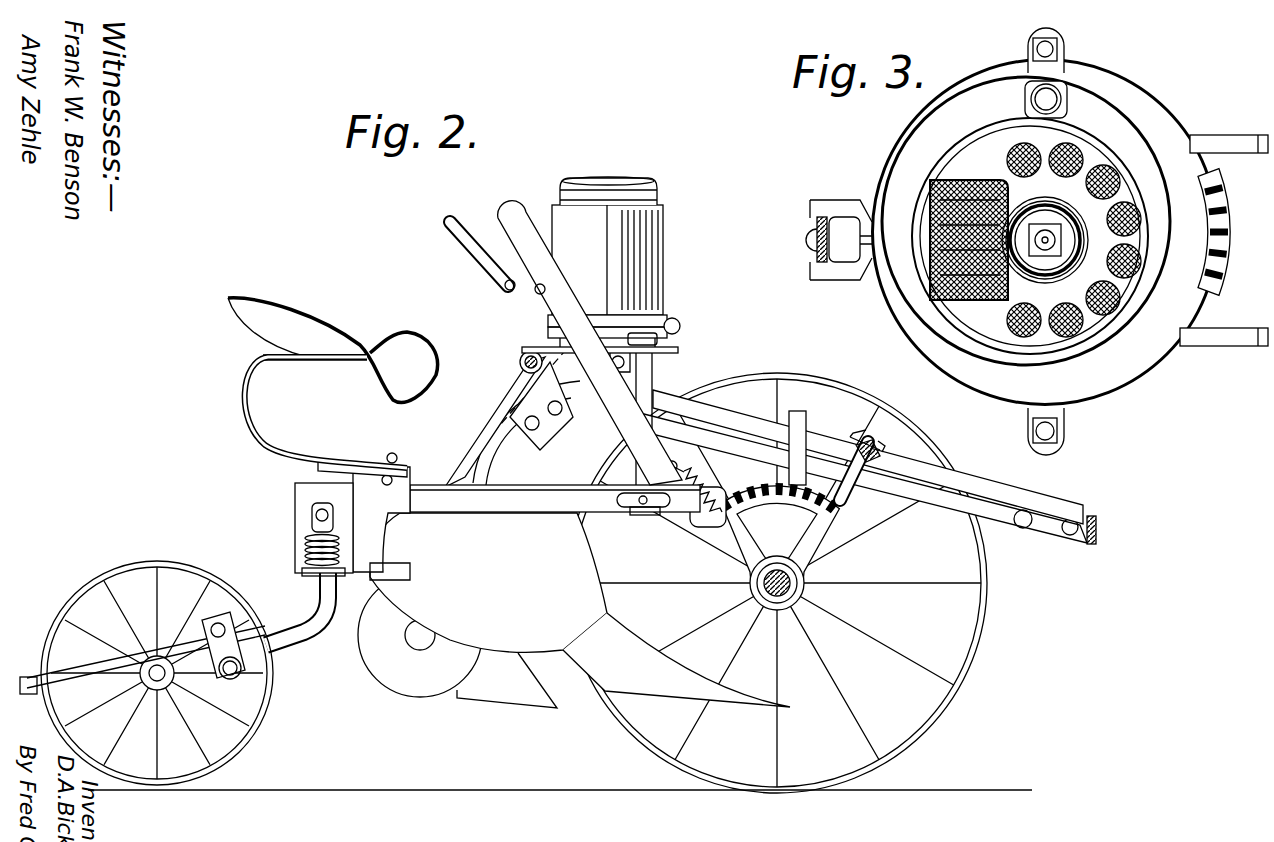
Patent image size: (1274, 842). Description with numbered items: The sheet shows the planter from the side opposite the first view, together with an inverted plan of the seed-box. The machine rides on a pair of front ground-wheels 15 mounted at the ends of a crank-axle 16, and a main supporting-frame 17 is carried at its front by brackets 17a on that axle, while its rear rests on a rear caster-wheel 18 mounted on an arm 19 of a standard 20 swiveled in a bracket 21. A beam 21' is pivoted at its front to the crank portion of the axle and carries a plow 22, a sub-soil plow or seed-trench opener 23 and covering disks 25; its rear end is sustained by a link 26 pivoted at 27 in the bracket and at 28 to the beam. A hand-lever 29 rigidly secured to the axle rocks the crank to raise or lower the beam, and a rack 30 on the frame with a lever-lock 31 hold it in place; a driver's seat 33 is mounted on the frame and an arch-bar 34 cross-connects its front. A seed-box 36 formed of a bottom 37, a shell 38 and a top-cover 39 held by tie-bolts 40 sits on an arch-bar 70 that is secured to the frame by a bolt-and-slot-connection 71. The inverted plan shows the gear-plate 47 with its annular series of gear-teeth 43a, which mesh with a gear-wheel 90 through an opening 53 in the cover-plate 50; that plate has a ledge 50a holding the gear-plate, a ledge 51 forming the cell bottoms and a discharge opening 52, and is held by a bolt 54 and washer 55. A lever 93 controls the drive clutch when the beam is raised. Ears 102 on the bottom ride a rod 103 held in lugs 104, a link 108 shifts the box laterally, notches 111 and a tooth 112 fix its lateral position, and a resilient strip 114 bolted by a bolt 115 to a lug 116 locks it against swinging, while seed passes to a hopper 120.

In FIG. 2, the front ground-wheels 15 is at (992, 640).
In FIG. 2, the crank-axle 16 is at (805, 585).
In FIG. 2, the main supporting-frame 17 is at (548, 502).
In FIG. 2, the brackets 17a is at (790, 527).
In FIG. 2, the rear caster-wheel 18 is at (147, 565).
In FIG. 2, the arm 19 is at (262, 706).
In FIG. 2, the standard 20 is at (318, 588).
In FIG. 2, the bracket 21 is at (352, 516).
In FIG. 2, the beam 21' is at (784, 462).
In FIG. 2, the plow 22 is at (580, 610).
In FIG. 2, the sub-soil plow or seed-trench opener 23 is at (463, 692).
In FIG. 2, the disks 25 is at (375, 648).
In FIG. 2, the link 26 is at (492, 428).
In FIG. 2, the pivot 27 is at (368, 566).
In FIG. 2, the pivot 28 is at (520, 362).
In FIG. 2, the hand-lever 29 is at (510, 302).
In FIG. 2, the rack 30 is at (705, 532).
In FIG. 2, the lever-lock 31 is at (702, 482).
In FIG. 2, the driver's seat 33 is at (260, 328).
In FIG. 2, the arch-bar 34 is at (800, 432).
In FIG. 2, the seed-box 36 is at (607, 260).
In FIG. 2, the bottom 37 is at (655, 320).
In FIG. 2, the shell 38 is at (650, 252).
In FIG. 2, the top-cover 39 is at (606, 182).
In FIG. 3, the tie-bolts 40 is at (1036, 48).
In FIG. 3, the gear-teeth 43a is at (992, 198).
In FIG. 3, the gear-plate 47 is at (975, 298).
In FIG. 3, the bottom-plate or cover 50 is at (1045, 232).
In FIG. 3, the ledge 50a is at (1082, 243).
In FIG. 3, the ledge 51 is at (908, 302).
In FIG. 3, the discharge opening 52 is at (1075, 80).
In FIG. 3, the opening 53 is at (930, 190).
In FIG. 3, the bolt 54 is at (1045, 262).
In FIG. 3, the washer 55 is at (1045, 212).
In FIG. 2, the arch-bar 70 is at (655, 409).
In FIG. 2, the bolt-and-slot-connection 71 is at (622, 512).
In FIG. 2, the gear-wheel 90 is at (600, 266).
In FIG. 2, the lever 93 is at (645, 375).
In FIG. 3, the ears 102 is at (1222, 145).
In FIG. 2, the rod 103 is at (680, 330).
In FIG. 2, the lugs 104 is at (676, 320).
In FIG. 2, the link 108 is at (680, 348).
In FIG. 3, the notches 111 is at (1230, 262).
In FIG. 3, the tooth 112 is at (848, 205).
In FIG. 3, the resilient strip 114 is at (825, 245).
In FIG. 3, the bolt 115 is at (808, 238).
In FIG. 3, the lug 116 is at (832, 272).
In FIG. 2, the hopper 120 is at (541, 406).